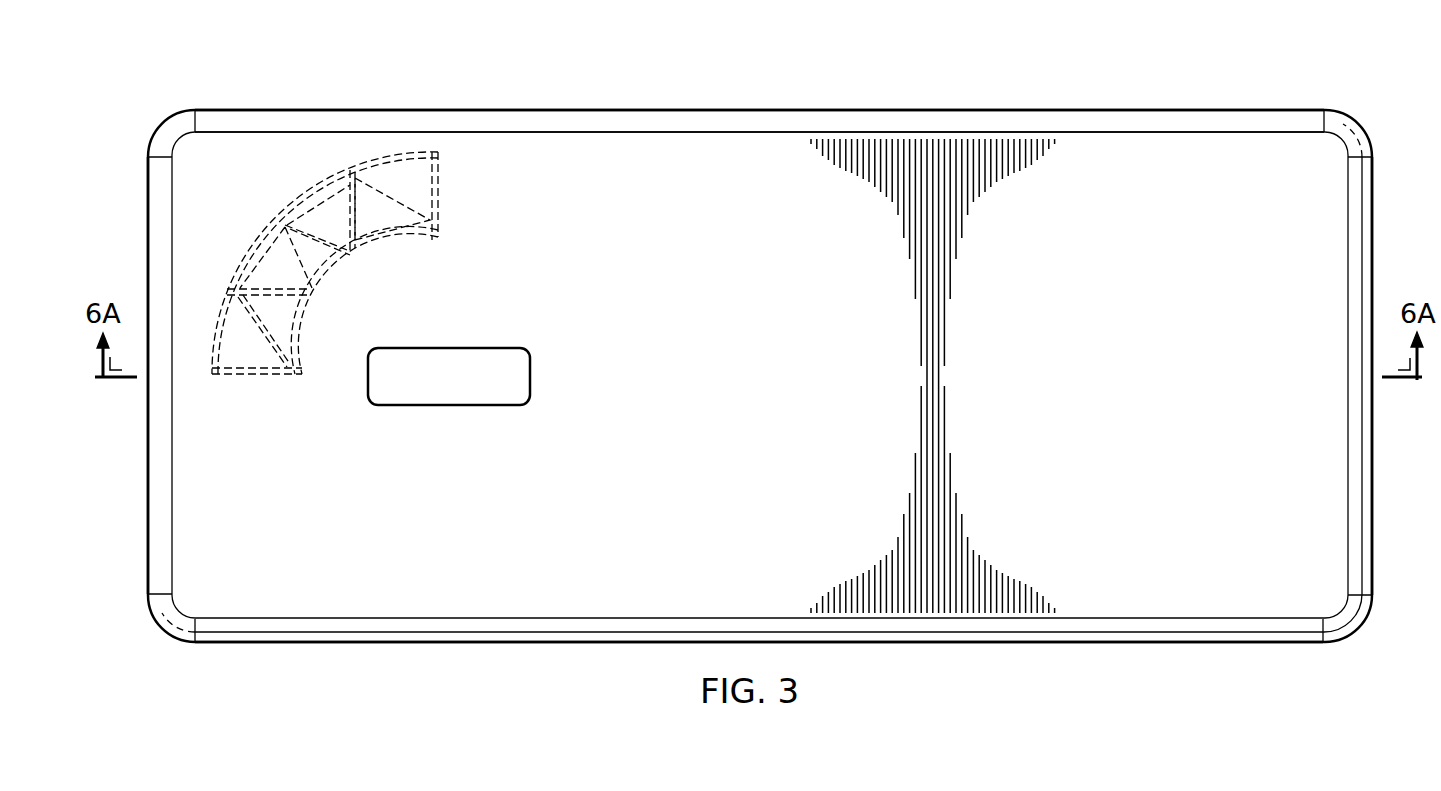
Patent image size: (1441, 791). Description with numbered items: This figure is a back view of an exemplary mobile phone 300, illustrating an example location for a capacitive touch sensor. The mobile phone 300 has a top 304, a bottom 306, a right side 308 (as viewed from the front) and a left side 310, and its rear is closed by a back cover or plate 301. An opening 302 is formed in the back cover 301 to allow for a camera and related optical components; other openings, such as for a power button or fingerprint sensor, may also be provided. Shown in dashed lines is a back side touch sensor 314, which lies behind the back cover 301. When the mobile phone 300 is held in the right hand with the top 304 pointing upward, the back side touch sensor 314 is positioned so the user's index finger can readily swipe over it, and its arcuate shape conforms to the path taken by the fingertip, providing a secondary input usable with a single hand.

The mobile phone 300 is at (1043, 85).
The back cover or plate 301 is at (478, 108).
The left side 310 is at (757, 108).
The top 304 is at (149, 487).
The bottom 306 is at (1373, 486).
The right side 308 is at (478, 643).
The opening 302 is at (450, 350).
The back side touch sensor 314 is at (265, 213).